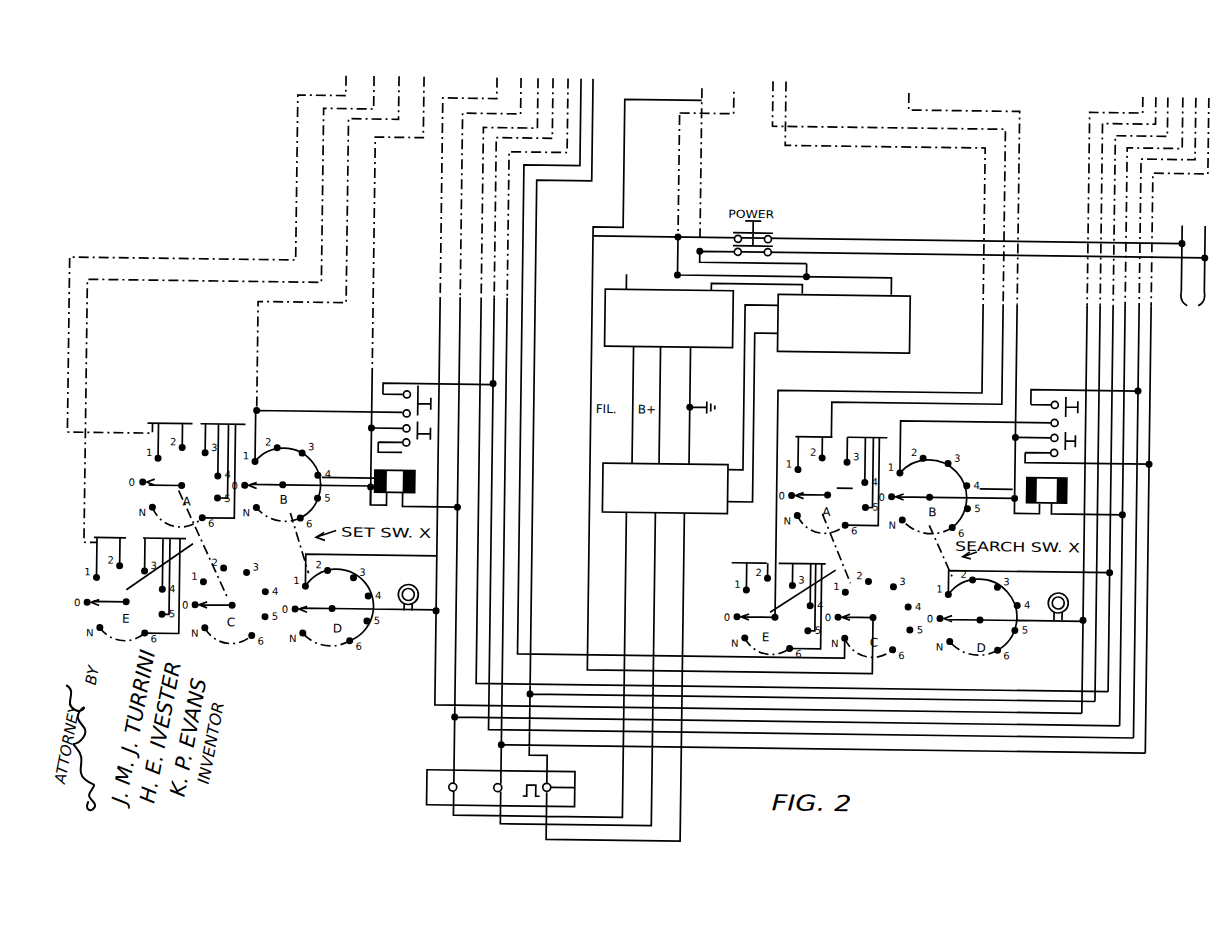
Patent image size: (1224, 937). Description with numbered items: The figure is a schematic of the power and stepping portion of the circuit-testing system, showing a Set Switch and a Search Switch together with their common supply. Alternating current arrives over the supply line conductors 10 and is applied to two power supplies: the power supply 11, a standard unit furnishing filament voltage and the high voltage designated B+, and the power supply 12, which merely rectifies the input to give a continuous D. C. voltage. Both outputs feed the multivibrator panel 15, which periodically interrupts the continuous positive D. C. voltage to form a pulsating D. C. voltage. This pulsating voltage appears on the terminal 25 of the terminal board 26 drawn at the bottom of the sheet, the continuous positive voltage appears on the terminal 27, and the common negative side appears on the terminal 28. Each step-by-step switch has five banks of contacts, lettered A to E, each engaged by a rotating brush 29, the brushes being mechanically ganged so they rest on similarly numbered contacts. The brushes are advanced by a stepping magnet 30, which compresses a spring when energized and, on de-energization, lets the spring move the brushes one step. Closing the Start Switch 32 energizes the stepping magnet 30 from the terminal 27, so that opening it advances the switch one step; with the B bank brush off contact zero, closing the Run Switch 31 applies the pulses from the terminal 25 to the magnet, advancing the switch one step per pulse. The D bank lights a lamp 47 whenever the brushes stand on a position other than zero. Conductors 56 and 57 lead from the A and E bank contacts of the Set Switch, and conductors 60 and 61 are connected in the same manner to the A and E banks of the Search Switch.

The A. C. supply line conductors 10 is at (1193, 265).
The power supply 11 is at (610, 290).
The power supply 12 is at (911, 308).
The multivibrator panel 15 is at (612, 464).
The terminal 25 is at (583, 789).
The terminal board 26 is at (560, 773).
The terminal 27 is at (503, 796).
The terminal 28 is at (457, 796).
The brush 29 is at (180, 489).
The stepping magnet 30 is at (406, 474).
The Run Switch 31 is at (428, 384).
The Start Switch 32 is at (433, 417).
The lamp 47 is at (424, 580).
The conductors 56 is at (175, 430).
The conductors 57 is at (98, 548).
The conductors 60 is at (813, 435).
The conductors 61 is at (748, 562).